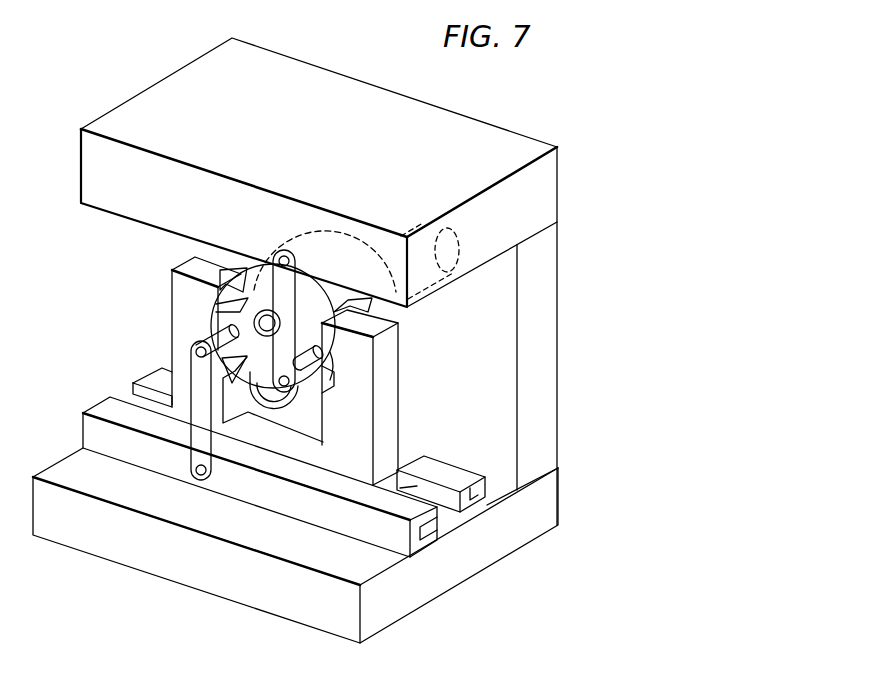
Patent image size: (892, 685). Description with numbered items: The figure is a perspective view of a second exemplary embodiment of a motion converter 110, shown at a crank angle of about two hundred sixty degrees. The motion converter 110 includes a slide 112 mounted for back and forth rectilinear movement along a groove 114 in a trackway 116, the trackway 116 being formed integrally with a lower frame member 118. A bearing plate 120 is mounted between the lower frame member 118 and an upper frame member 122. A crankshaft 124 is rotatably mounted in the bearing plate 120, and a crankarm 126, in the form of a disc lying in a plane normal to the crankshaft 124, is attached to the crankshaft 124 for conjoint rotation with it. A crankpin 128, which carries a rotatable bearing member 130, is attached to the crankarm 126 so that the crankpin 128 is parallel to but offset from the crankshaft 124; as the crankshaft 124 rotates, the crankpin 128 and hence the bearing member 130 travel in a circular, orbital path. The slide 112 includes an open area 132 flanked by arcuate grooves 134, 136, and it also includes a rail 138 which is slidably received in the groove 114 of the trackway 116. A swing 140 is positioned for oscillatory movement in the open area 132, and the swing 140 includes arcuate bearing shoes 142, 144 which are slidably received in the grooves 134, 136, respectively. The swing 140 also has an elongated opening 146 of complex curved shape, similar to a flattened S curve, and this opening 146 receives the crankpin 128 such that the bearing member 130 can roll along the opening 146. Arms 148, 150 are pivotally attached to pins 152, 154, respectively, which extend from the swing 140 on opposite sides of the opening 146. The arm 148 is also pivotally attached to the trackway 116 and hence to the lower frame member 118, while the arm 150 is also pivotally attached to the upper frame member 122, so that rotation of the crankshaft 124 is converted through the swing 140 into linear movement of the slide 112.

The motion converter 110 is at (88, 78).
The slide 112 is at (386, 374).
The groove 114 is at (443, 512).
The trackway 116 is at (367, 525).
The lower frame member 118 is at (417, 590).
The bearing plate 120 is at (540, 304).
The upper frame member 122 is at (505, 147).
The crankshaft 124 is at (450, 242).
The crankarm 126 is at (378, 232).
The crankpin 128 is at (262, 300).
The bearing member 130 is at (266, 318).
The open area 132 is at (296, 438).
The arcuate groove 134 is at (216, 264).
The arcuate groove 136 is at (352, 365).
The rail 138 is at (400, 488).
The swing 140 is at (312, 305).
The arcuate bearing shoe 142 is at (210, 300).
The arcuate bearing shoe 144 is at (336, 378).
The elongated opening 146 is at (258, 422).
The arm 148 is at (196, 457).
The arm 150 is at (292, 260).
The pin 152 is at (206, 322).
The pin 154 is at (322, 410).